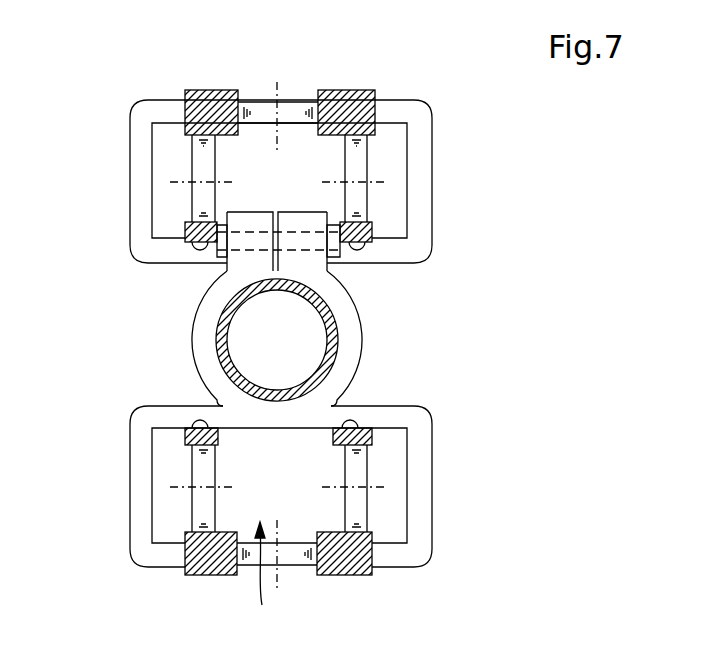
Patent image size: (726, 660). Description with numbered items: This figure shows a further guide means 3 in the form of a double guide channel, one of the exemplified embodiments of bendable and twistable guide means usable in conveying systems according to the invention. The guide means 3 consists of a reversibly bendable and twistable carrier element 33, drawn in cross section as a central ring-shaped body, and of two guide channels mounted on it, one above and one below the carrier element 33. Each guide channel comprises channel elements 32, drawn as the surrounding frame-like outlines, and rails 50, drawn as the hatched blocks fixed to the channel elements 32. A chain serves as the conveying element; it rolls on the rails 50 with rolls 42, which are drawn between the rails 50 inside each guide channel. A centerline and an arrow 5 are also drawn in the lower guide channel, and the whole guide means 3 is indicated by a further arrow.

The guide means 3 is at (548, 331).
The direction of movement 5 is at (268, 578).
The channel element 32 is at (146, 170).
The carrier element 33 is at (225, 310).
The rolls 42 is at (200, 470).
The rail 50 is at (340, 95).